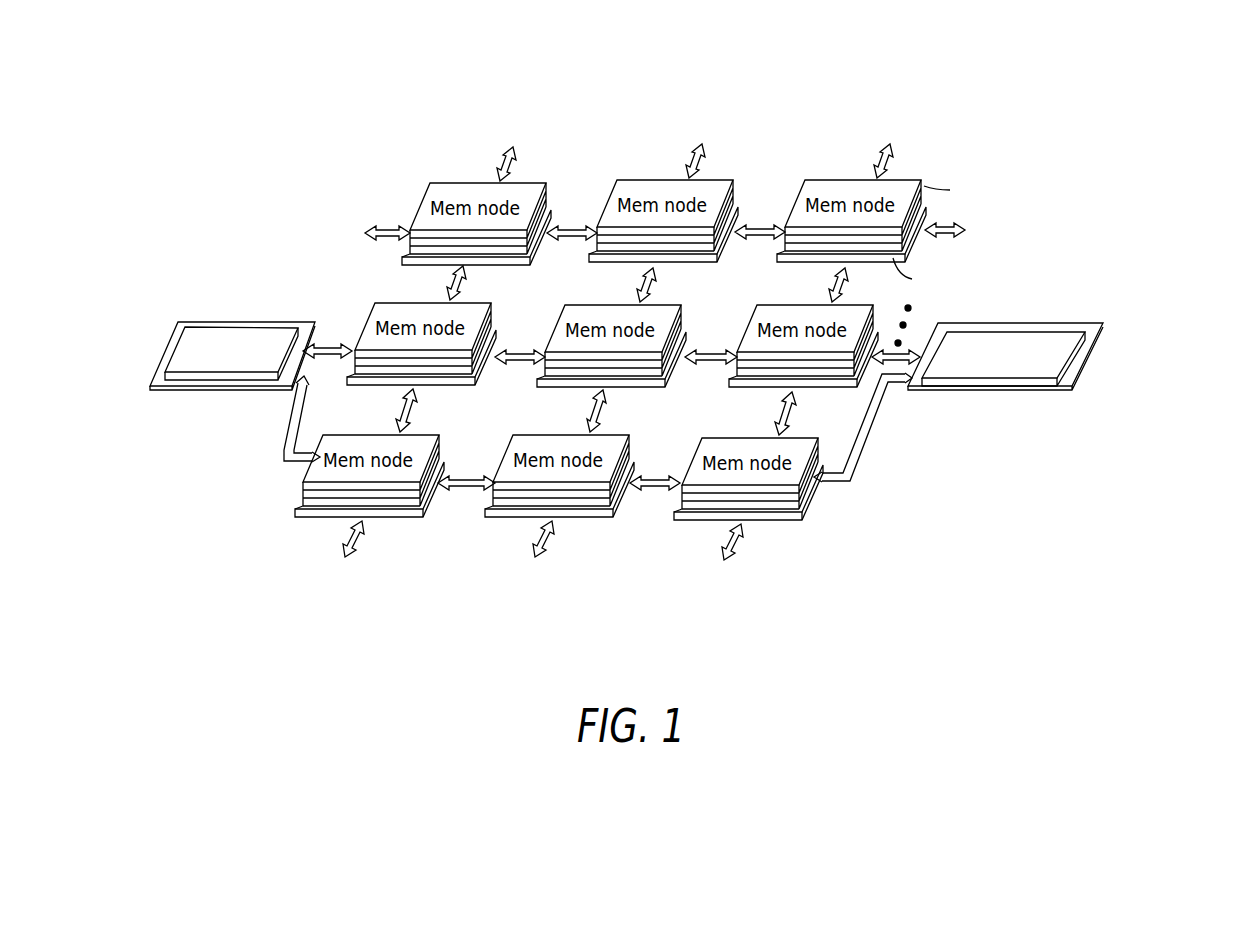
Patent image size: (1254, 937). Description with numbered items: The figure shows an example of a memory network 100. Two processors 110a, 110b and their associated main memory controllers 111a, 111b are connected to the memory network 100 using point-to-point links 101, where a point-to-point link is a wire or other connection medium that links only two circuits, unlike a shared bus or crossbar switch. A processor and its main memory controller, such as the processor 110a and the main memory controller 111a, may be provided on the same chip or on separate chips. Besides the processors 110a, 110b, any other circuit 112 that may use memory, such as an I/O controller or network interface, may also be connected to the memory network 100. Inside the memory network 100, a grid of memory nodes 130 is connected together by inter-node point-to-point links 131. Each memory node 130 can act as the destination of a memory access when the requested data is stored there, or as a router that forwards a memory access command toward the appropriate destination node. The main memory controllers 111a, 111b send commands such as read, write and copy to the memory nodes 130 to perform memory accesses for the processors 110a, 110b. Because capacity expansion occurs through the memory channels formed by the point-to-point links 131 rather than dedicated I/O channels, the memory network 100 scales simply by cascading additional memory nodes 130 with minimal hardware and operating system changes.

The memory network 100 is at (670, 286).
The processor 110a is at (207, 365).
The processor 110b is at (1027, 392).
The main memory controller 111a is at (155, 332).
The main memory controller 111b is at (927, 374).
The circuit 112 is at (252, 204).
The memory nodes 130 is at (479, 185).
The point-to-point links 131 is at (532, 328).
The point-to-point links 101 is at (278, 440).